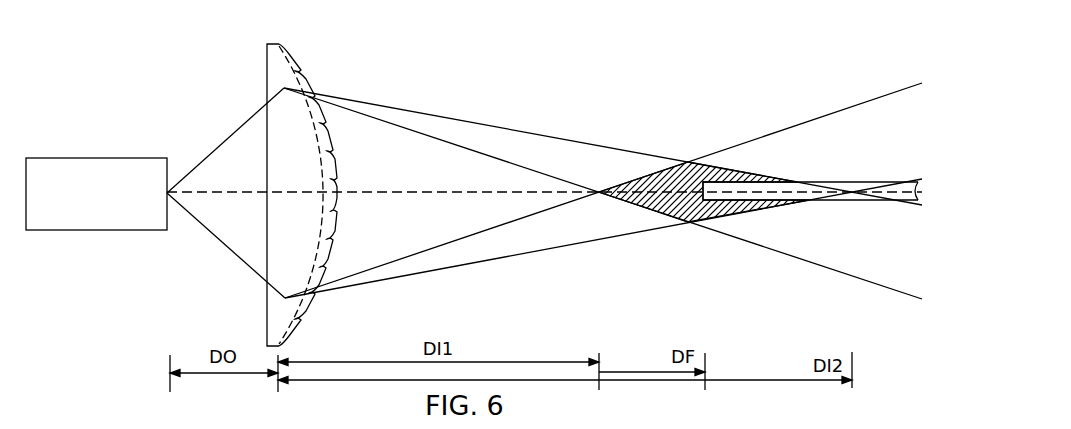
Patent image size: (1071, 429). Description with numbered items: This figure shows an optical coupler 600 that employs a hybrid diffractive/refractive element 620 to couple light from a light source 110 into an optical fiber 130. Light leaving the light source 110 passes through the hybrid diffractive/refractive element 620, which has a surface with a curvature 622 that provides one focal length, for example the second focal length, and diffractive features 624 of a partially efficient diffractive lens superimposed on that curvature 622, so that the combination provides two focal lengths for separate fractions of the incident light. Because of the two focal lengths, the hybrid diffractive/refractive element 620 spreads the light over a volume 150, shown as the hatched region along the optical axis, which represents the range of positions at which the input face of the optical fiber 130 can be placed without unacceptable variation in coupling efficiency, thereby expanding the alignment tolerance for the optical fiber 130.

The optical coupler 600 is at (120, 53).
The light source 110 is at (80, 218).
The hybrid diffractive/refractive element 620 is at (277, 47).
The curvature 622 is at (318, 247).
The diffractive features 624 is at (331, 144).
The volume 150 is at (674, 162).
The optical fiber 130 is at (847, 180).